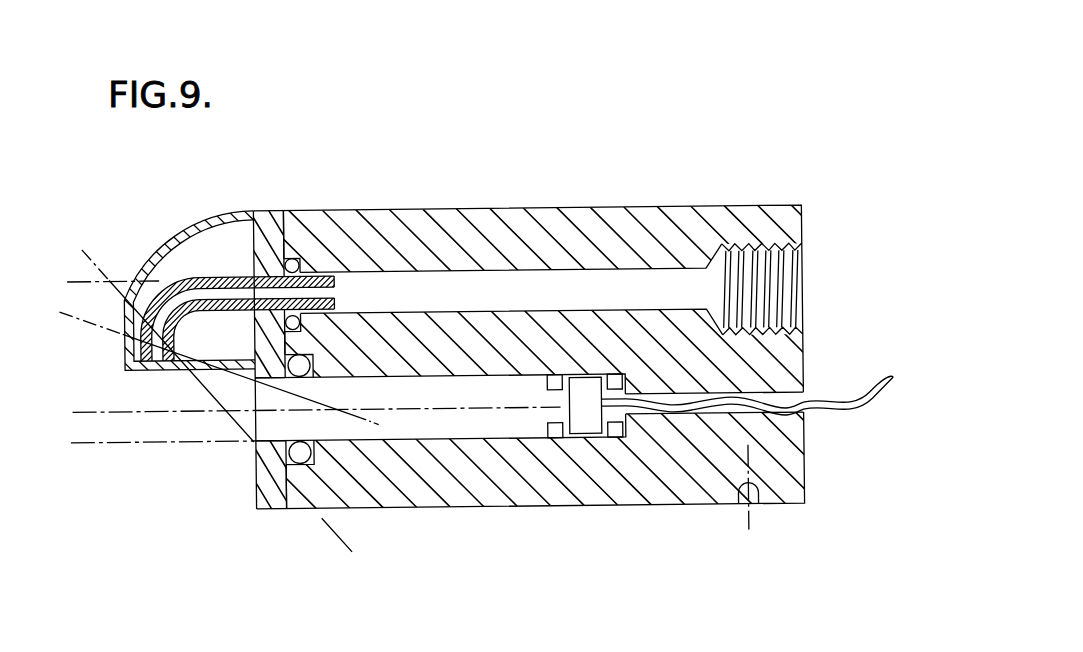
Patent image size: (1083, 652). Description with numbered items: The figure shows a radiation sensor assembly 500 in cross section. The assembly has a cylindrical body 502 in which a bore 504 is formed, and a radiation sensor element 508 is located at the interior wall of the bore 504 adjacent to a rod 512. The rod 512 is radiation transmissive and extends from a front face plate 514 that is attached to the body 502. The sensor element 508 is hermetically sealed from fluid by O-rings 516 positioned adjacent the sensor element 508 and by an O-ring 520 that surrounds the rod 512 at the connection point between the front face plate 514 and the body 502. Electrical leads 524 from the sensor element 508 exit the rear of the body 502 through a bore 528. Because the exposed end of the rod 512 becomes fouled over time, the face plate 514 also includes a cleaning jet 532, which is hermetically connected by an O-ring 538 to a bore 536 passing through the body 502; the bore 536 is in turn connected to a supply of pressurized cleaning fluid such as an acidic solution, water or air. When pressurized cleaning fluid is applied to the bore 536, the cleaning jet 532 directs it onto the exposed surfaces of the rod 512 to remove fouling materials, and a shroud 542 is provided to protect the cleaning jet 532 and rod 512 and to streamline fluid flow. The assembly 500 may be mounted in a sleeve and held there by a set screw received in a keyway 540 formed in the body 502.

The radiation sensor assembly 500 is at (512, 114).
The cylindrical body 502 is at (443, 206).
The bore 504 is at (490, 447).
The radiation sensor element 508 is at (585, 437).
The rod 512 is at (394, 419).
The front face plate 514 is at (273, 207).
The O-rings 516 is at (617, 375).
The O-ring 520 is at (318, 512).
The electrical leads 524 is at (832, 396).
The bore 528 is at (806, 410).
The cleaning jet 532 is at (150, 288).
The bore 536 is at (668, 281).
The O-ring 538 is at (296, 256).
The keyway 540 is at (752, 503).
The cap 542 is at (163, 229).